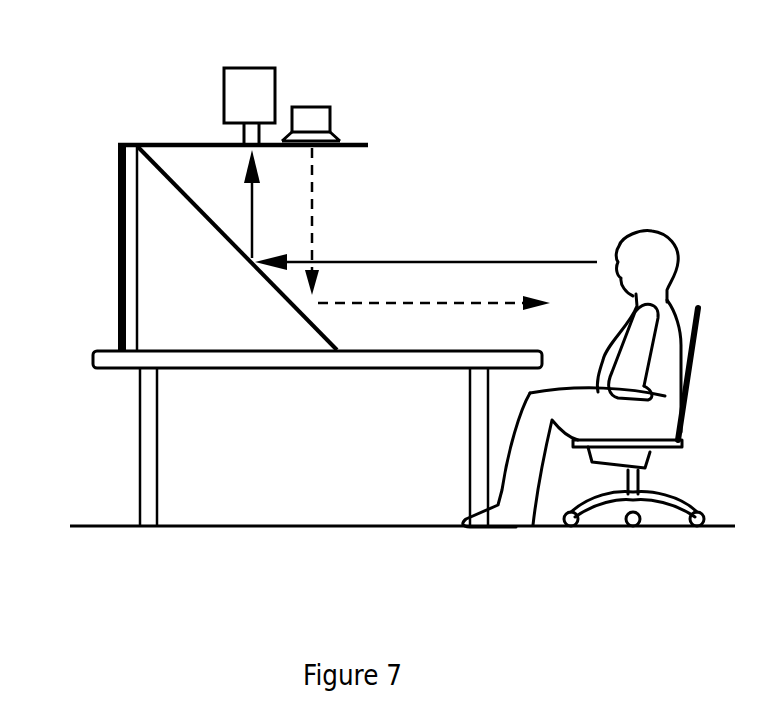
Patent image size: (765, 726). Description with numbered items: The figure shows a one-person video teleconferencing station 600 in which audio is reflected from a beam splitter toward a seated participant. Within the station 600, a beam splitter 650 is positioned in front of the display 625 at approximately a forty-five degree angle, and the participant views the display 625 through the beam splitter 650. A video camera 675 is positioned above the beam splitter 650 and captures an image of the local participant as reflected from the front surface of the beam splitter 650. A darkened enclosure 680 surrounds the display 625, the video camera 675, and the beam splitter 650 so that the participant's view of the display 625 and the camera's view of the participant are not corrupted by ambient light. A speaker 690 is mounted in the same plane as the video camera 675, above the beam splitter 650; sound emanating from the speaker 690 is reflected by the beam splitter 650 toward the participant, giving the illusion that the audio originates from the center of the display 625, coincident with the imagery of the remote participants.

The station 600 is at (302, 191).
The display 625 is at (118, 252).
The beam splitter 650 is at (178, 192).
The video camera 675 is at (225, 78).
The darkened enclosure 680 is at (360, 143).
The speaker 690 is at (323, 107).